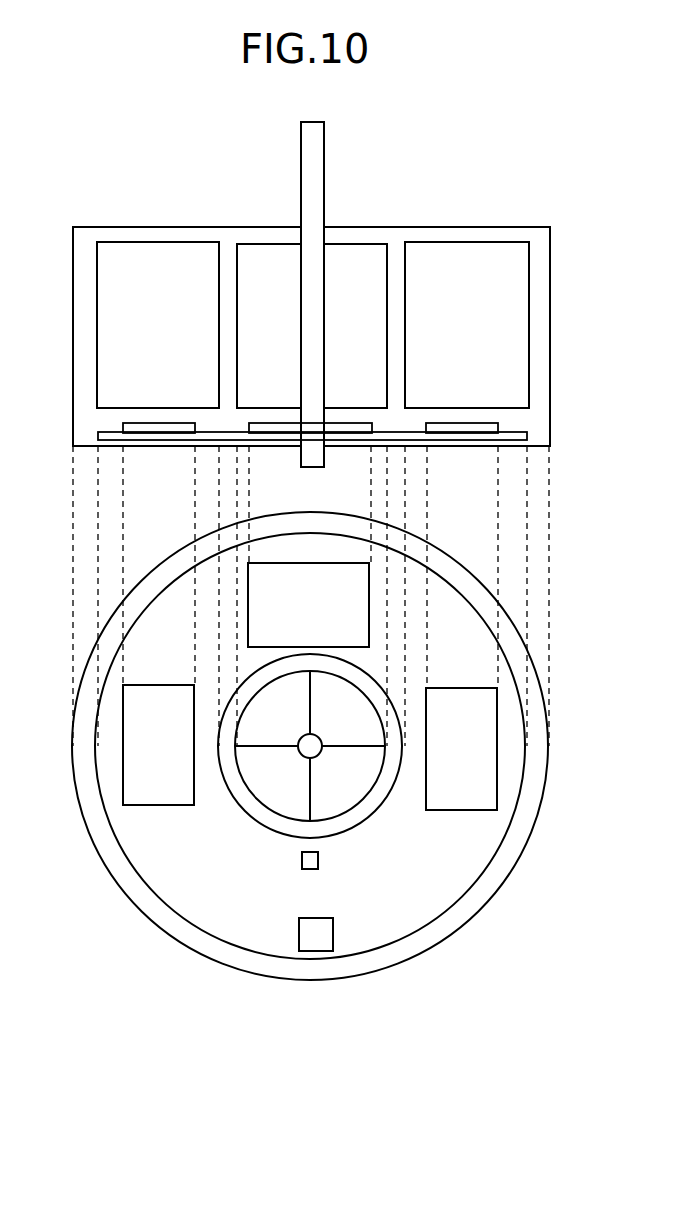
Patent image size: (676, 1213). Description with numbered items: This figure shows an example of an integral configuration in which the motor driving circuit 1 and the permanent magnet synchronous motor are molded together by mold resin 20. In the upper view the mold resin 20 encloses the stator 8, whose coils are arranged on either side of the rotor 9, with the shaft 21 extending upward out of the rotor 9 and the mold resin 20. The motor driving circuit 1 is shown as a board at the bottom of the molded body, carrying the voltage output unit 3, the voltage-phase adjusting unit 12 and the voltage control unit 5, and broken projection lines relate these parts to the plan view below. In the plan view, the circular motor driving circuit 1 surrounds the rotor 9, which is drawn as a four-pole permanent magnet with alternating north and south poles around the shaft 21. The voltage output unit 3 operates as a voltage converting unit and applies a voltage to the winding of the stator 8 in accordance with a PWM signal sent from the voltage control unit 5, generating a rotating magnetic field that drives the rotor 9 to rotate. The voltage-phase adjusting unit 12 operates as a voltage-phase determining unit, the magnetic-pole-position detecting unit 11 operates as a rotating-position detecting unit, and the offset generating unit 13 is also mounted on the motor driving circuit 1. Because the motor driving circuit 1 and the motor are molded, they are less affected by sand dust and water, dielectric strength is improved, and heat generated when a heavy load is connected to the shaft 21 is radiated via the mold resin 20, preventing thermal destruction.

The motor driving circuit 1 is at (98, 440).
The voltage output unit 3 is at (123, 425).
The voltage control unit 5 is at (498, 427).
The stator 8 is at (97, 330).
The rotor 9 is at (250, 244).
The magnetic-pole-position detecting unit 11 is at (302, 860).
The voltage-phase adjusting unit 12 is at (296, 425).
The offset generating unit 13 is at (333, 930).
The mold resin 20 is at (552, 257).
The shaft 21 is at (308, 160).